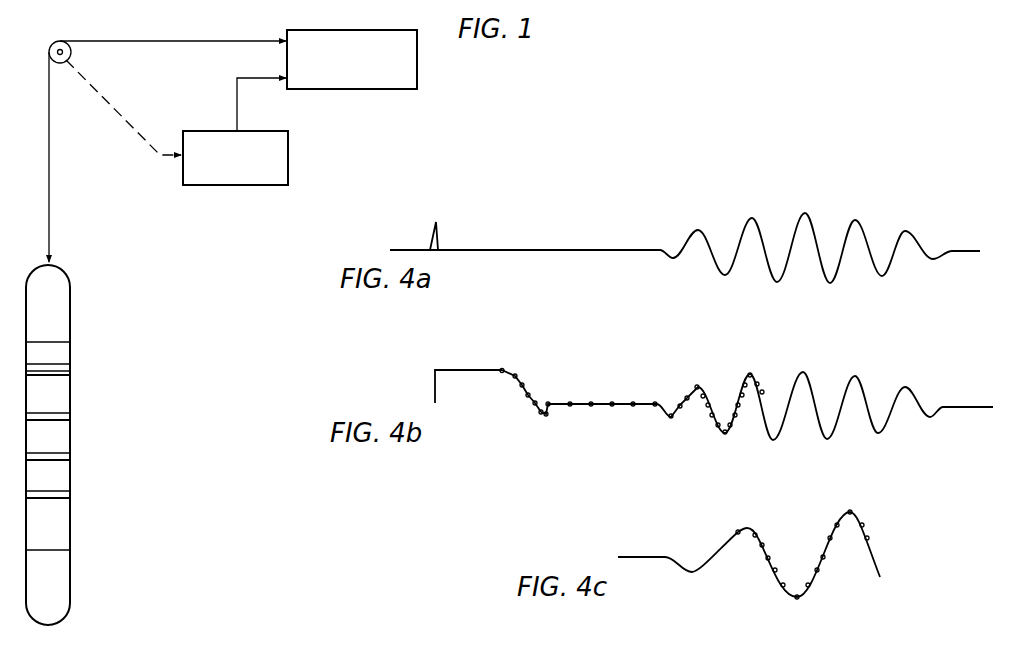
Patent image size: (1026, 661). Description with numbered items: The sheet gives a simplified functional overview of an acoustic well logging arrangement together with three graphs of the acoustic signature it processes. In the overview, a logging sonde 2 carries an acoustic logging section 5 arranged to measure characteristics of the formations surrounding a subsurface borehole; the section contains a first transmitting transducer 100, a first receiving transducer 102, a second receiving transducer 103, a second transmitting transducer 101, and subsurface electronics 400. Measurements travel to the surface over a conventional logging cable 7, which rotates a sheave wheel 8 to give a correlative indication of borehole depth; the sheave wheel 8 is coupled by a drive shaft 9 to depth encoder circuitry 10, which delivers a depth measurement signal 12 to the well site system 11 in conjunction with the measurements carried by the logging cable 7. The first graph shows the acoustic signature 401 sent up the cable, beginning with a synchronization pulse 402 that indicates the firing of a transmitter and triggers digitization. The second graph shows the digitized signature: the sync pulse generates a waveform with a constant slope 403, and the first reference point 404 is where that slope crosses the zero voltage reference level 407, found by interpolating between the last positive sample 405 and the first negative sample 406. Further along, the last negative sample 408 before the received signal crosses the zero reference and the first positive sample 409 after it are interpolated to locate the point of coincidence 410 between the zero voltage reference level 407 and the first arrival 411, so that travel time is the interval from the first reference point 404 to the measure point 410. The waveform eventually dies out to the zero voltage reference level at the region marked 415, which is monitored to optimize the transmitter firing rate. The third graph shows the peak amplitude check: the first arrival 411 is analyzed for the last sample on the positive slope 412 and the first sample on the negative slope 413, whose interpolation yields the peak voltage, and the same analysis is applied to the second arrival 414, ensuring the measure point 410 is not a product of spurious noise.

In FIG. 1, the logging sonde 2 is at (82, 590).
In FIG. 1, the acoustic logging section 5 is at (103, 445).
In FIG. 1, the logging cable 7 is at (159, 43).
In FIG. 1, the sheave wheel 8 is at (47, 48).
In FIG. 1, the drive shaft 9 is at (120, 114).
In FIG. 1, the depth encoder circuitry 10 is at (237, 186).
In FIG. 1, the well site system 11 is at (369, 90).
In FIG. 1, the depth measurement signal 12 is at (236, 99).
In FIG. 1, the first transmitting transducer 100 is at (71, 376).
In FIG. 1, the second transmitting transducer 101 is at (71, 495).
In FIG. 1, the first receiving transducer 102 is at (71, 418).
In FIG. 1, the second receiving transducer 103 is at (71, 457).
In FIG. 1, the subsurface electronics 400 is at (71, 350).
In FIG. 4A, the acoustic signature 401 is at (568, 203).
In FIG. 4B, the acoustic signature 401 is at (690, 362).
In FIG. 4A, the synchronization pulse 402 is at (436, 222).
In FIG. 4B, the constant slope 403 is at (530, 380).
In FIG. 4B, the first reference point 404 is at (533, 406).
In FIG. 4B, the last positive sample 405 is at (531, 394).
In FIG. 4B, the first negative sample 406 is at (538, 418).
In FIG. 4B, the zero voltage reference level 407 is at (586, 410).
In FIG. 4B, the negative sample 408 is at (670, 420).
In FIG. 4B, the first positive sample 409 is at (680, 403).
In FIG. 4B, the point of coincidence 410 is at (683, 409).
In FIG. 4B, the first arrival 411 is at (707, 392).
In FIG. 4C, the first arrival 411 is at (754, 523).
In FIG. 4C, the last sample on the positive slope 412 is at (738, 530).
In FIG. 4C, the first sample on the negative slope 413 is at (761, 534).
In FIG. 4C, the second arrival 414 is at (862, 513).
In FIG. 4B, the waveform die-out point 415 is at (971, 404).